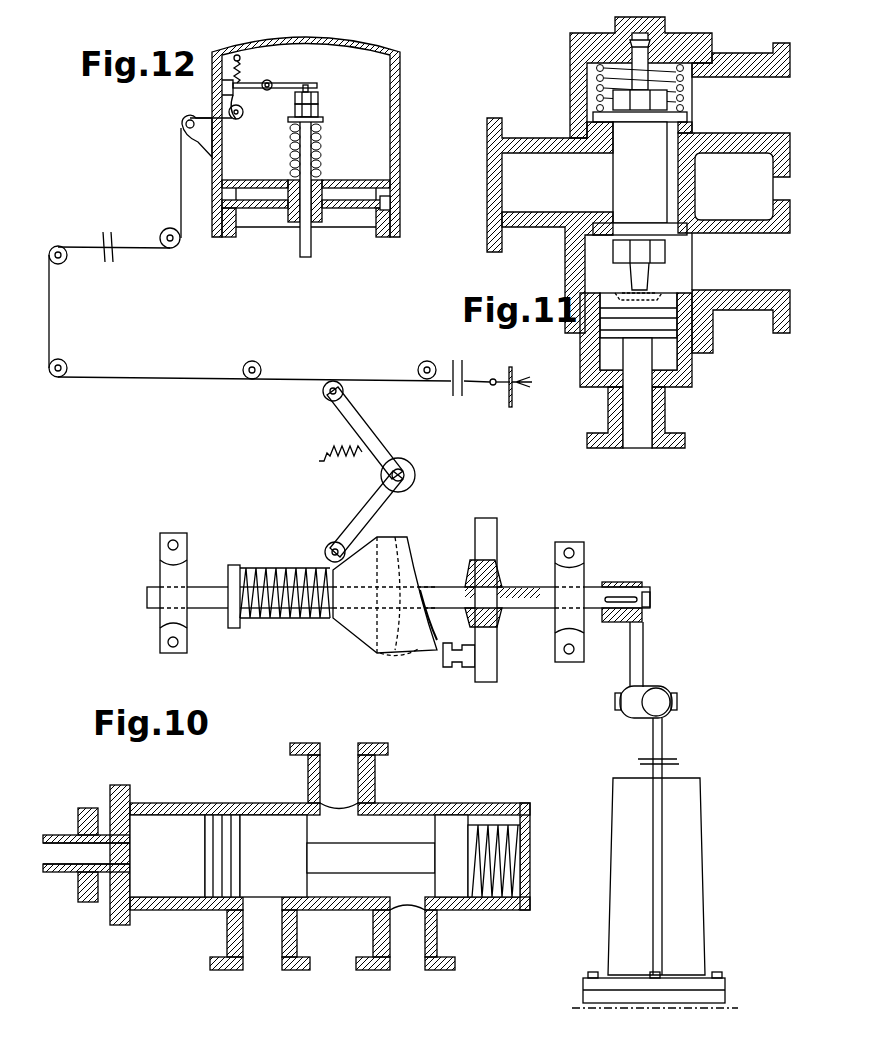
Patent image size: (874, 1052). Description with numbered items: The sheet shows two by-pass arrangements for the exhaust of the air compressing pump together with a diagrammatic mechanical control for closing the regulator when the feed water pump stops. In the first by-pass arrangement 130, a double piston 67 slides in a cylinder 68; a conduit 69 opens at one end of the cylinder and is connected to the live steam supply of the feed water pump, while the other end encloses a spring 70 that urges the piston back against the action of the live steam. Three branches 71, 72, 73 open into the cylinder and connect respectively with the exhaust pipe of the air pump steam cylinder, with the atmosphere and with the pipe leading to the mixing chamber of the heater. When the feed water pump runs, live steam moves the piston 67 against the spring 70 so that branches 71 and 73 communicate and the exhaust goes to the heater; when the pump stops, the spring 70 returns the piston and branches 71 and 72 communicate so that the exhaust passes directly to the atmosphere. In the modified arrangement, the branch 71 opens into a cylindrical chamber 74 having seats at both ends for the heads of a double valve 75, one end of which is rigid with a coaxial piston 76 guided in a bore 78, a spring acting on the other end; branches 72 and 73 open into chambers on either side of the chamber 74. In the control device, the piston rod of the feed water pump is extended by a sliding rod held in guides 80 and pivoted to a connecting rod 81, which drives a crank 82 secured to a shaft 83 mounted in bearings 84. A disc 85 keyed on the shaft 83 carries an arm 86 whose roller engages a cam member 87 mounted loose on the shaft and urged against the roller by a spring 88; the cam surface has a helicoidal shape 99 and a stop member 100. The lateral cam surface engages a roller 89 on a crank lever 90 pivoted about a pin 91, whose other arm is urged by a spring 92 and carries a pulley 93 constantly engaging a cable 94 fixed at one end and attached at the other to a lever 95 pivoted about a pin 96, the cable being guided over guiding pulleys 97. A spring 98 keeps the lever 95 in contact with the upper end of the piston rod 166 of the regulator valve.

In FIG. 10, the double piston 67 is at (401, 848).
In FIG. 10, the cylinder 68 is at (182, 825).
In FIG. 10, the conduit 69 is at (118, 858).
In FIG. 10, the spring 70 is at (505, 820).
In FIG. 11, the exhaust conduit 71 is at (554, 201).
In FIG. 10, the exhaust conduit 71 is at (340, 783).
In FIG. 10, the branch 72 is at (270, 947).
In FIG. 11, the branch 73 is at (733, 93).
In FIG. 10, the branch 73 is at (422, 941).
In FIG. 11, the cylindrical chamber 74 is at (680, 202).
In FIG. 11, the double valve 75 is at (620, 173).
In FIG. 11, the piston 76 is at (610, 322).
In FIG. 11, the bore 78 is at (611, 364).
In FIG. 12, the guides 80 is at (665, 812).
In FIG. 12, the connecting rod 81 is at (660, 745).
In FIG. 12, the crank 82 is at (639, 656).
In FIG. 12, the shaft 83 is at (525, 598).
In FIG. 12, the bearings 84 is at (168, 612).
In FIG. 12, the disc 85 is at (490, 672).
In FIG. 12, the arm 86 is at (415, 656).
In FIG. 12, the cam member 87 is at (362, 631).
In FIG. 12, the spring 88 is at (284, 625).
In FIG. 12, the roller 89 is at (338, 543).
In FIG. 12, the crank lever 90 is at (370, 432).
In FIG. 12, the pin 91 is at (410, 473).
In FIG. 12, the spring 92 is at (340, 458).
In FIG. 12, the roller or pulley 93 is at (343, 385).
In FIG. 12, the cord or cable 94 is at (192, 373).
In FIG. 12, the lever 95 is at (306, 88).
In FIG. 12, the pin 96 is at (273, 83).
In FIG. 12, the pulley 97 is at (174, 248).
In FIG. 12, the spring 98 is at (240, 75).
In FIG. 12, the helicoidal surface 99 is at (428, 612).
In FIG. 12, the stop member 100 is at (446, 654).
In FIG. 10, the by-pass arrangement 130 is at (262, 809).
In FIG. 12, the piston rod 166 is at (305, 240).